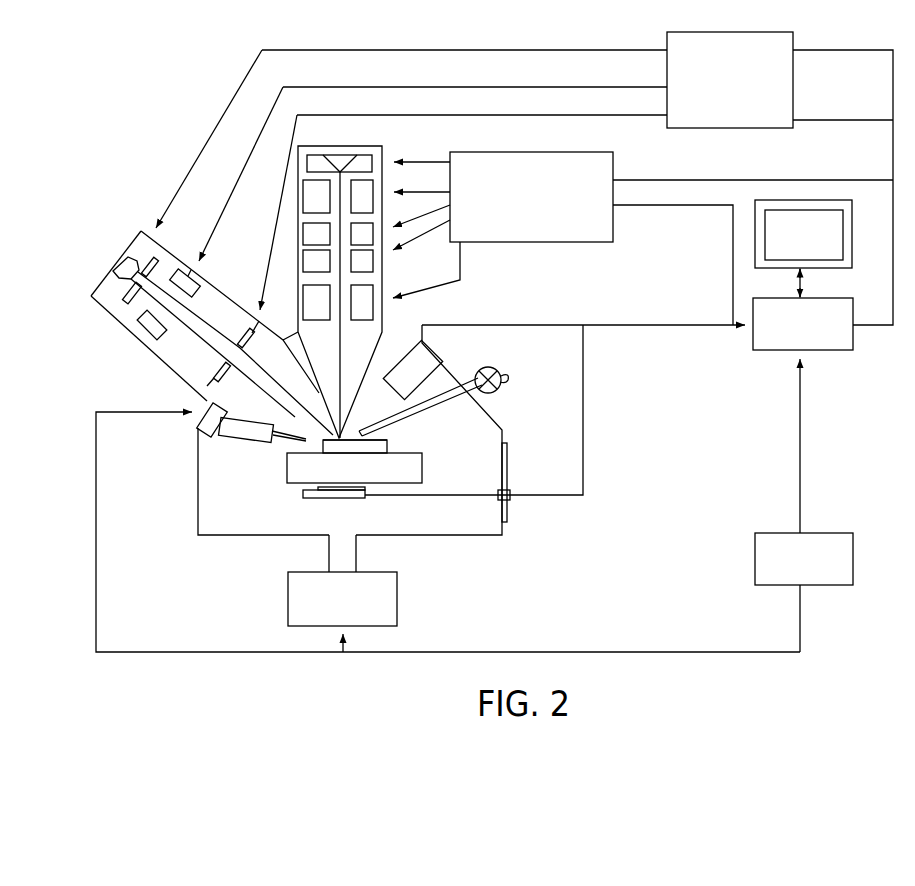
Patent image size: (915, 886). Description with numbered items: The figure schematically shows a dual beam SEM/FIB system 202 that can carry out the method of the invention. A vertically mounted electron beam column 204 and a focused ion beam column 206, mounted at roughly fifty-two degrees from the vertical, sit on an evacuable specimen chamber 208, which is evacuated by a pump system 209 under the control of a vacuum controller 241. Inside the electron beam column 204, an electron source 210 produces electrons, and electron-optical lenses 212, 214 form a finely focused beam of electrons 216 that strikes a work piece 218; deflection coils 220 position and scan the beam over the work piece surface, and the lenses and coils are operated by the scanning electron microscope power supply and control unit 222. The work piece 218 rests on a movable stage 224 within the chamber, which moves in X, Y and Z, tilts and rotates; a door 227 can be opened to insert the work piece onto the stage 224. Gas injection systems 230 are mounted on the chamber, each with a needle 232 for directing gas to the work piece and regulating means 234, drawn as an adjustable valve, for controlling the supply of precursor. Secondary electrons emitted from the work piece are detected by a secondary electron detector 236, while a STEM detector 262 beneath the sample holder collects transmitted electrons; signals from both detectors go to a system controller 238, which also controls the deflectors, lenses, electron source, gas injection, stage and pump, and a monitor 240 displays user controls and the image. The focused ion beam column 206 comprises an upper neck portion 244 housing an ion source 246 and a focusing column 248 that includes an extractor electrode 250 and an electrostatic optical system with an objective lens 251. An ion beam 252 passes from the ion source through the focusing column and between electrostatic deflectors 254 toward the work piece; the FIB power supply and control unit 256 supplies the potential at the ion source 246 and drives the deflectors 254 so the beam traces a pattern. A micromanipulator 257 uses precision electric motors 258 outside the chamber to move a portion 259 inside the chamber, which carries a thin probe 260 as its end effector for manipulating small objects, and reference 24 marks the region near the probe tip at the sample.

The dual beam SEM/FIB system 202 is at (170, 76).
The electron beam column 204 is at (398, 136).
The focused ion beam column 206 is at (108, 248).
The specimen chamber 208 is at (198, 512).
The pump system 209 is at (288, 598).
The electron source 210 is at (330, 155).
The electron-optical lens 212 is at (373, 181).
The electron-optical lens 214 is at (373, 283).
The beam of electrons 216 is at (343, 416).
The work piece 218 is at (388, 446).
The deflection coils 220 is at (304, 246).
The scanning electron microscope power supply and control unit 222 is at (614, 174).
The movable stage 224 is at (423, 464).
The door 227 is at (510, 462).
The gas injection system 230 is at (506, 408).
The needle 232 is at (400, 426).
The regulating means 234 is at (503, 372).
The secondary electron detector 236 is at (428, 343).
The system controller 238 is at (771, 350).
The monitor 240 is at (803, 249).
The vacuum controller 241 is at (855, 556).
The upper neck portion 244 is at (213, 288).
The ion source 246 is at (105, 275).
The focusing column 248 is at (173, 348).
The extractor electrode 250 is at (152, 258).
The objective lens 251 is at (146, 340).
The ion beam 252 is at (290, 409).
The electrostatic deflectors 254 is at (215, 375).
The FIB power supply and control unit 256 is at (794, 90).
The micromanipulator 257 is at (196, 400).
The precision electric motors 258 is at (197, 428).
The portion 259 is at (240, 438).
The thin probe 260 is at (290, 438).
The STEM detector 262 is at (340, 497).
The sample surface 24 is at (289, 447).